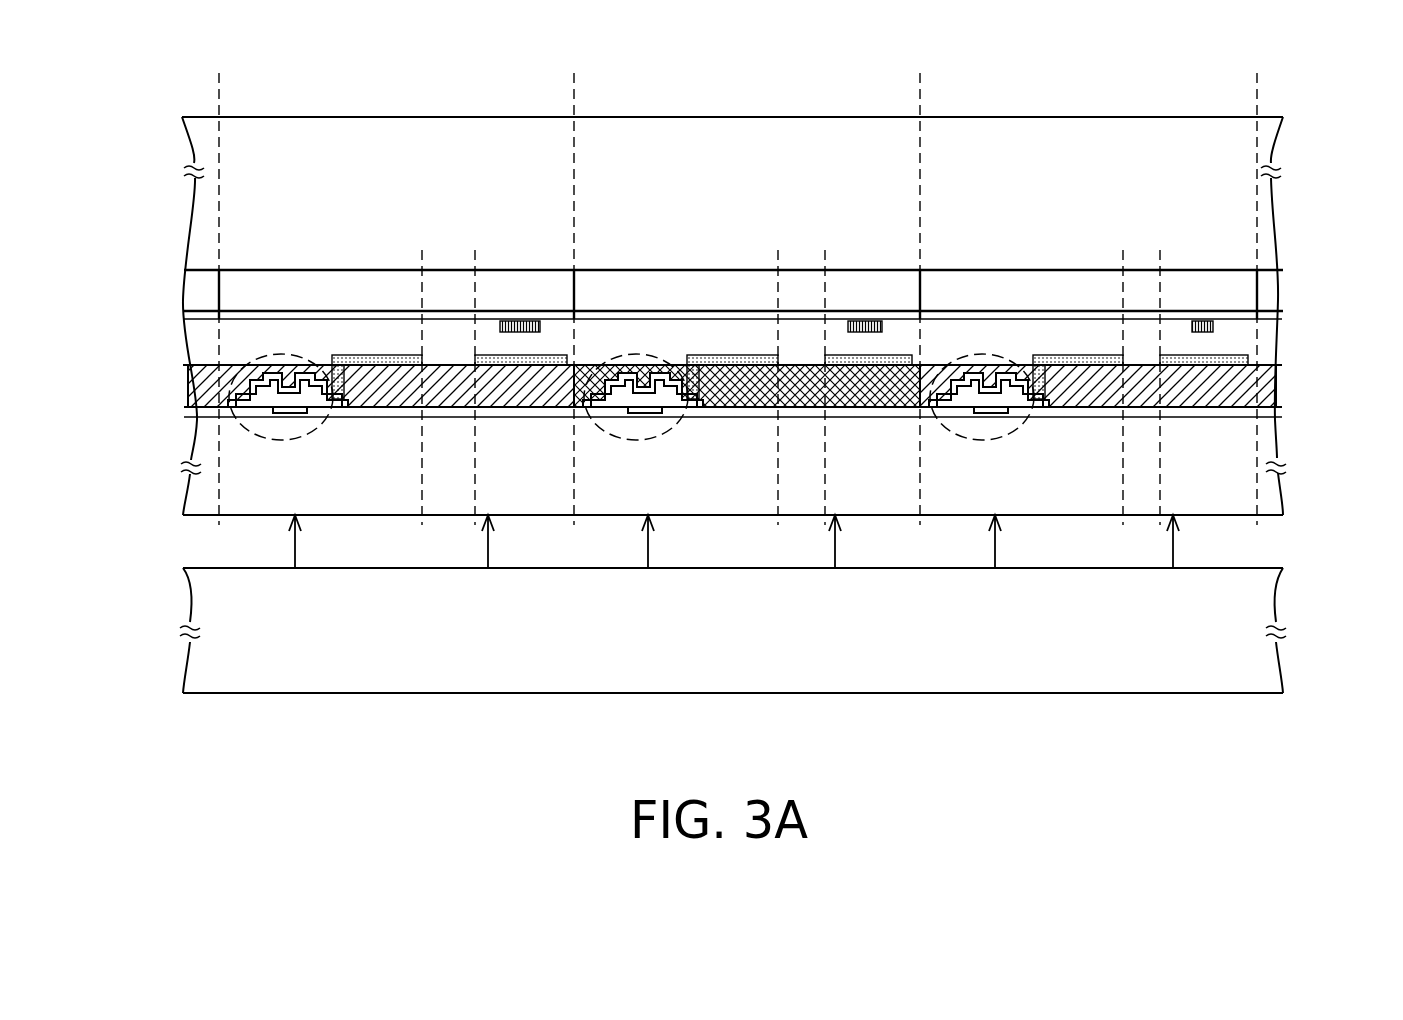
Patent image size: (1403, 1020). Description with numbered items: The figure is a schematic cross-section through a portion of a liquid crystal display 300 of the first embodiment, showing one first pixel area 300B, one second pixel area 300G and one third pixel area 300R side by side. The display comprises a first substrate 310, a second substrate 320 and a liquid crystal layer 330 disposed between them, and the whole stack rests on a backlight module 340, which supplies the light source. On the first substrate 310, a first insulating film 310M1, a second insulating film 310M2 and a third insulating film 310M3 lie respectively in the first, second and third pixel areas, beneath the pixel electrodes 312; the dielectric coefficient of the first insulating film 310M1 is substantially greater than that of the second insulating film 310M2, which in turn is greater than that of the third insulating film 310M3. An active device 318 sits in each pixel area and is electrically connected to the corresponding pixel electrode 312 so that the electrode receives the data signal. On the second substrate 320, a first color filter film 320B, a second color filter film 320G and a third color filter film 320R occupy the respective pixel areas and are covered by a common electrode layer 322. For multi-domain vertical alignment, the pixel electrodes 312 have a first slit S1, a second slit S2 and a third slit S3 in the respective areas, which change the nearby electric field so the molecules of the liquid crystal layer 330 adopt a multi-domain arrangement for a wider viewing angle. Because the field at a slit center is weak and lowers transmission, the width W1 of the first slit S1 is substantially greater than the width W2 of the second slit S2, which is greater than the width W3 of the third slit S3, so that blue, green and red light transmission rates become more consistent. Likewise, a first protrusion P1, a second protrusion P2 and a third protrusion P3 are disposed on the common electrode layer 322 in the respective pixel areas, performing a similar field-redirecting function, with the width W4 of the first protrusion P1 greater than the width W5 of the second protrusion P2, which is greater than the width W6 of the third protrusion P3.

The liquid crystal display 300 is at (1350, 789).
The first pixel area 300B is at (558, 94).
The second pixel area 300G is at (904, 94).
The third pixel area 300R is at (1241, 94).
The first substrate 310 is at (1310, 365).
The first insulating film 310M1 is at (458, 400).
The second insulating film 310M2 is at (813, 400).
The third insulating film 310M3 is at (1159, 400).
The pixel electrode 312 is at (753, 360).
The active device 318 is at (641, 424).
The second substrate 320 is at (1310, 115).
The first color filter film 320B is at (315, 278).
The second color filter film 320G is at (670, 278).
The third color filter film 320R is at (1016, 278).
The common electrode layer 322 is at (187, 318).
The liquid crystal layer 330 is at (1310, 320).
The backlight module 340 is at (1283, 678).
The first slit S1 is at (433, 339).
The second slit S2 is at (788, 339).
The third slit S3 is at (1134, 339).
The width of the first slit W1 is at (477, 270).
The width of the second slit W2 is at (825, 270).
The width of the third slit W3 is at (1160, 270).
The width of the first protrusion W4 is at (550, 306).
The width of the second protrusion W5 is at (892, 306).
The width of the third protrusion W6 is at (1223, 306).
The first protrusion P1 is at (520, 333).
The second protrusion P2 is at (865, 333).
The third protrusion P3 is at (1202, 333).